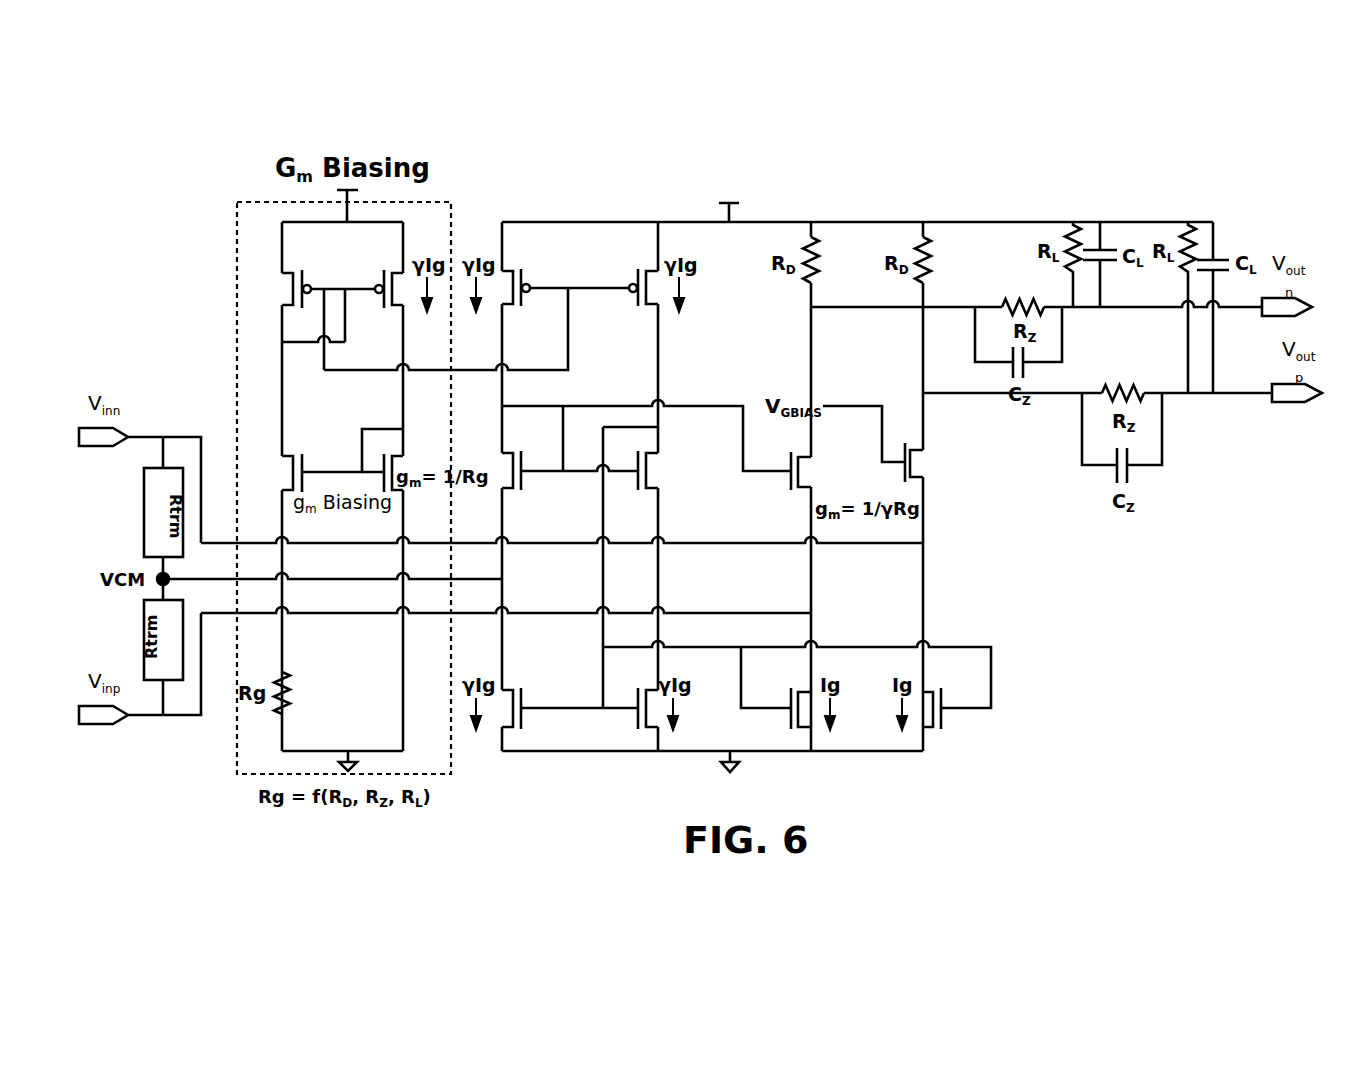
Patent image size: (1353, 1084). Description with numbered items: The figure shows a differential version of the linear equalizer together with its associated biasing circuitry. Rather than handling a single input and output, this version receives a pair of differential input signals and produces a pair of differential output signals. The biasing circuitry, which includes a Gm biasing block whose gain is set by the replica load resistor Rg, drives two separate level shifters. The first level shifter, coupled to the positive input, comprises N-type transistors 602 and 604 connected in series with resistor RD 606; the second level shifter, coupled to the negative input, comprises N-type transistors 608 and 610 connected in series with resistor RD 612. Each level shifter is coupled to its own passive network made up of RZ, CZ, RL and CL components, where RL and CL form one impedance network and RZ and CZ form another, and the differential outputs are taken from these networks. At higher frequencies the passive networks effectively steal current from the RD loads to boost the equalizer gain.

The N-type transistor 602 is at (790, 462).
The N-type transistor 604 is at (790, 697).
The resistor RD 606 is at (792, 266).
The N-type transistor 608 is at (927, 462).
The N-type transistor 610 is at (943, 697).
The resistor RD 612 is at (904, 266).